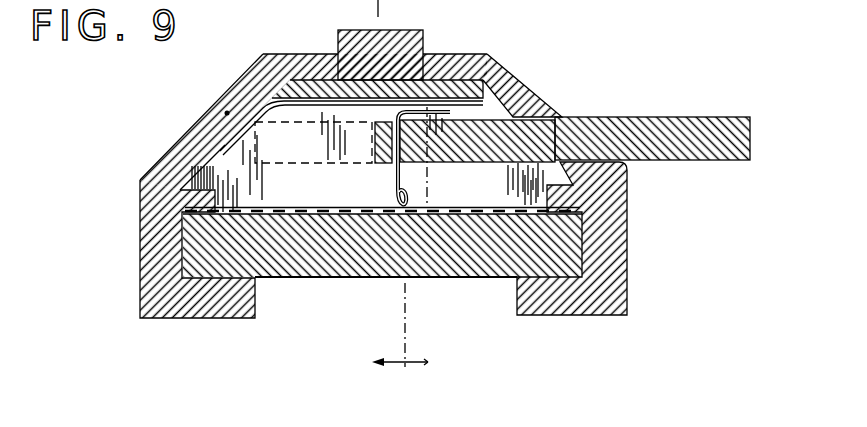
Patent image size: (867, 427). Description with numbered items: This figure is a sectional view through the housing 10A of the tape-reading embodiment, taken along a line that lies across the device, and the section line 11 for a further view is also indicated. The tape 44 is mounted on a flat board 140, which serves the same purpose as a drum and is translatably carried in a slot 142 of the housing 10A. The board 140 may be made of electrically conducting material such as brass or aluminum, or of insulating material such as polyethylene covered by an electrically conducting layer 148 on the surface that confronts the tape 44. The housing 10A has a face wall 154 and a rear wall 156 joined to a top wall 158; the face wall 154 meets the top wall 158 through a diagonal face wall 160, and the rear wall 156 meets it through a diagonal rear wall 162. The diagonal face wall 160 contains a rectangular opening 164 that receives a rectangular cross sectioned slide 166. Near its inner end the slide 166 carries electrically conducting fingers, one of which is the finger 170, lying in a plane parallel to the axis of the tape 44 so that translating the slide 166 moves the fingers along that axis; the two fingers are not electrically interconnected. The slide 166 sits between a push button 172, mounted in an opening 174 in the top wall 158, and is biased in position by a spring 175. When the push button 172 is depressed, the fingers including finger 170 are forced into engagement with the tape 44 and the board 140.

The push button 172 is at (347, 30).
The opening 174 is at (448, 54).
The top wall 158 is at (463, 53).
The diagonal face wall 160 is at (523, 80).
The rectangular opening 164 is at (557, 116).
The slide 166 is at (697, 116).
The spring 175 is at (262, 76).
The housing 10A is at (237, 92).
The diagonal rear wall 162 is at (197, 133).
The electrically conducting layer 148 is at (247, 192).
The tape 44 is at (327, 186).
The electrically conducting finger 170 is at (394, 179).
The face wall 154 is at (628, 210).
The slot 142 is at (570, 246).
The rear wall 156 is at (147, 262).
The flat board 140 is at (493, 277).
The section line 11 is at (400, 336).